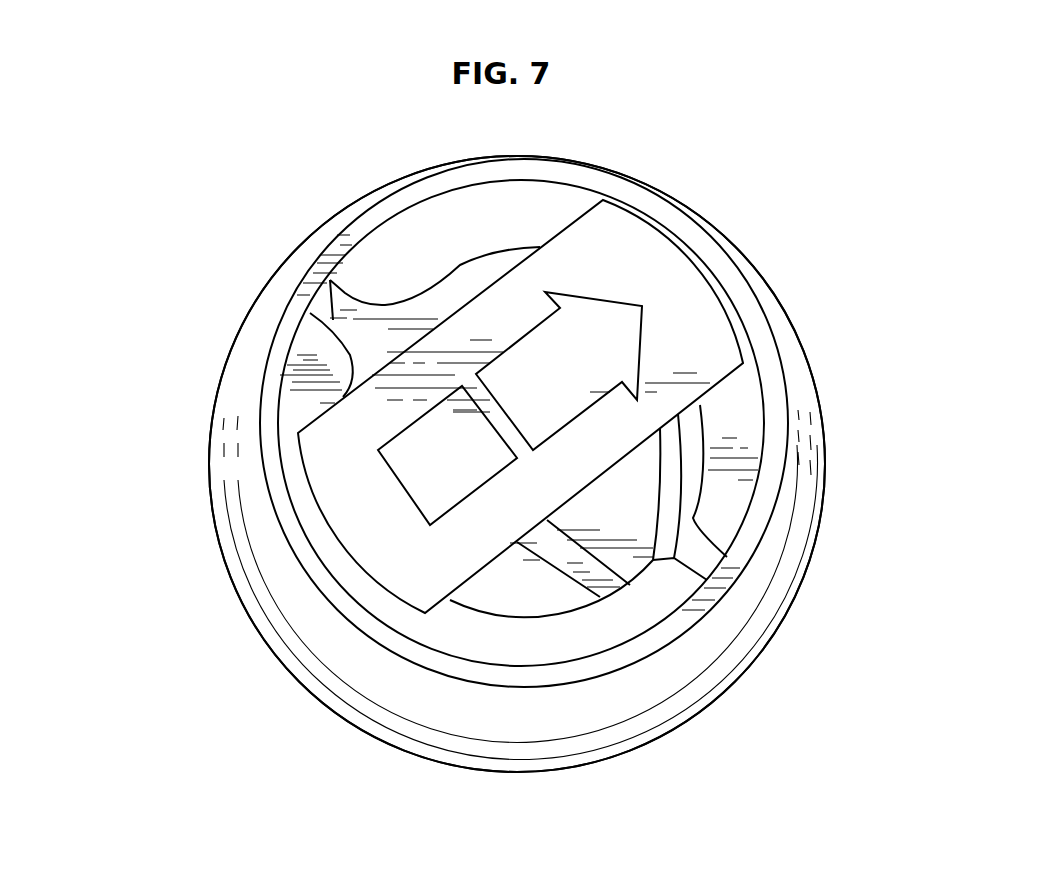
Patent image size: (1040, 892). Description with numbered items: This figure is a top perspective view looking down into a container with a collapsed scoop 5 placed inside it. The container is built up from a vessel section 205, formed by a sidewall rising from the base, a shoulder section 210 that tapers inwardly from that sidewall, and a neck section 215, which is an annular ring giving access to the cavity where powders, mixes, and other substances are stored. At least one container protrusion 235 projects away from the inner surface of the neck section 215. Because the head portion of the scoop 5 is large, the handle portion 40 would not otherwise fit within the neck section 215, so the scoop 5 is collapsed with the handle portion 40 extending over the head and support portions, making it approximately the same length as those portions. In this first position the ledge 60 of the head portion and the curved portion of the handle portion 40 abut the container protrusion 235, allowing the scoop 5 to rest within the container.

The scoop 5 is at (332, 566).
The handle portion 40 is at (363, 423).
The ledge 60 is at (450, 587).
The vessel section 205 is at (820, 413).
The shoulder section 210 is at (805, 478).
The neck section 215 is at (758, 317).
The container protrusion 235 is at (422, 245).